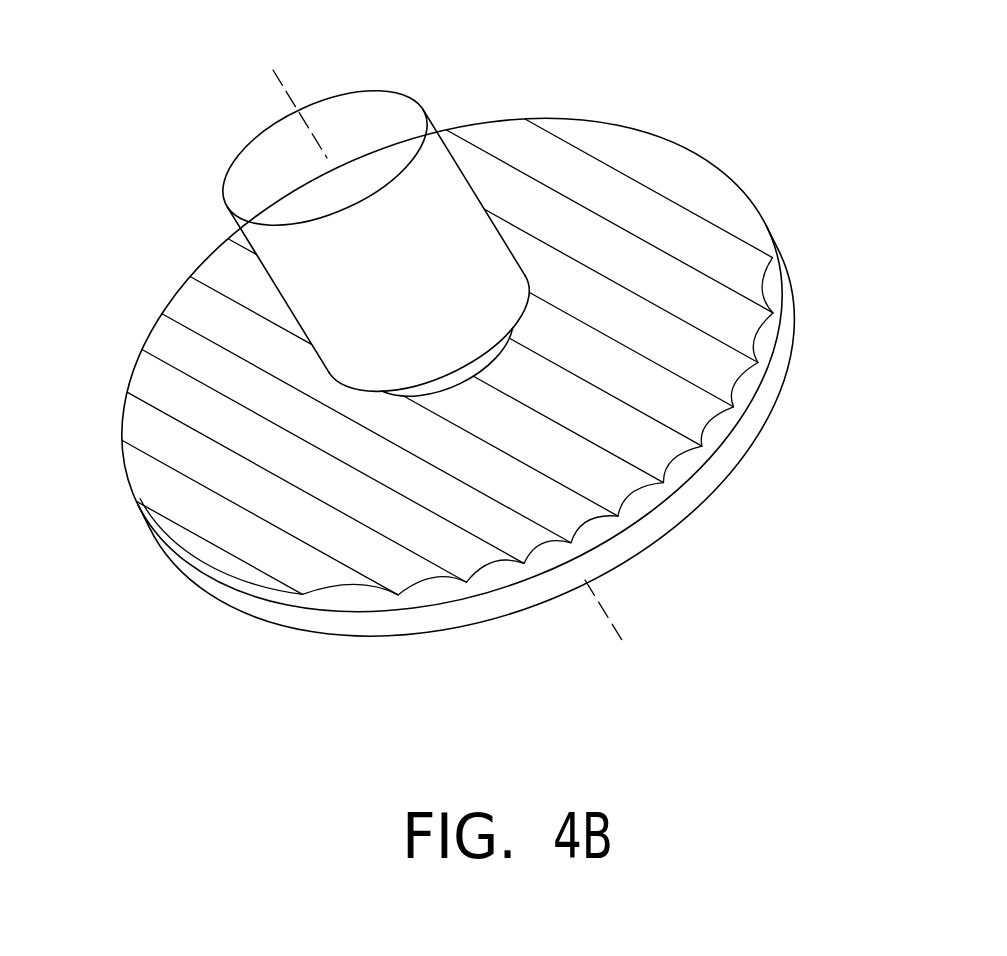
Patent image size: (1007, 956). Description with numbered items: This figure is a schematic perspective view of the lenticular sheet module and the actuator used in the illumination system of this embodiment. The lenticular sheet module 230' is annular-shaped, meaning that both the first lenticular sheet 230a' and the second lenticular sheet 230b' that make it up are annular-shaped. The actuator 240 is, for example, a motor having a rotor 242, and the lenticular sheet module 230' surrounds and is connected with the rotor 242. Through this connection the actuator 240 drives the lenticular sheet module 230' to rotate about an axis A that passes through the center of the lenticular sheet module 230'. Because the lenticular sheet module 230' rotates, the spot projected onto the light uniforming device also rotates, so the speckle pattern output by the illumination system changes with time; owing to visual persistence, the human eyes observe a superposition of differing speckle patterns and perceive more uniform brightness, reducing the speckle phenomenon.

The actuator 240 is at (438, 198).
The rotor 242 is at (500, 347).
The lenticular sheet module 230' is at (471, 365).
The first lenticular sheet 230a' is at (536, 431).
The second lenticular sheet 230b' is at (537, 426).
The axis A is at (600, 611).